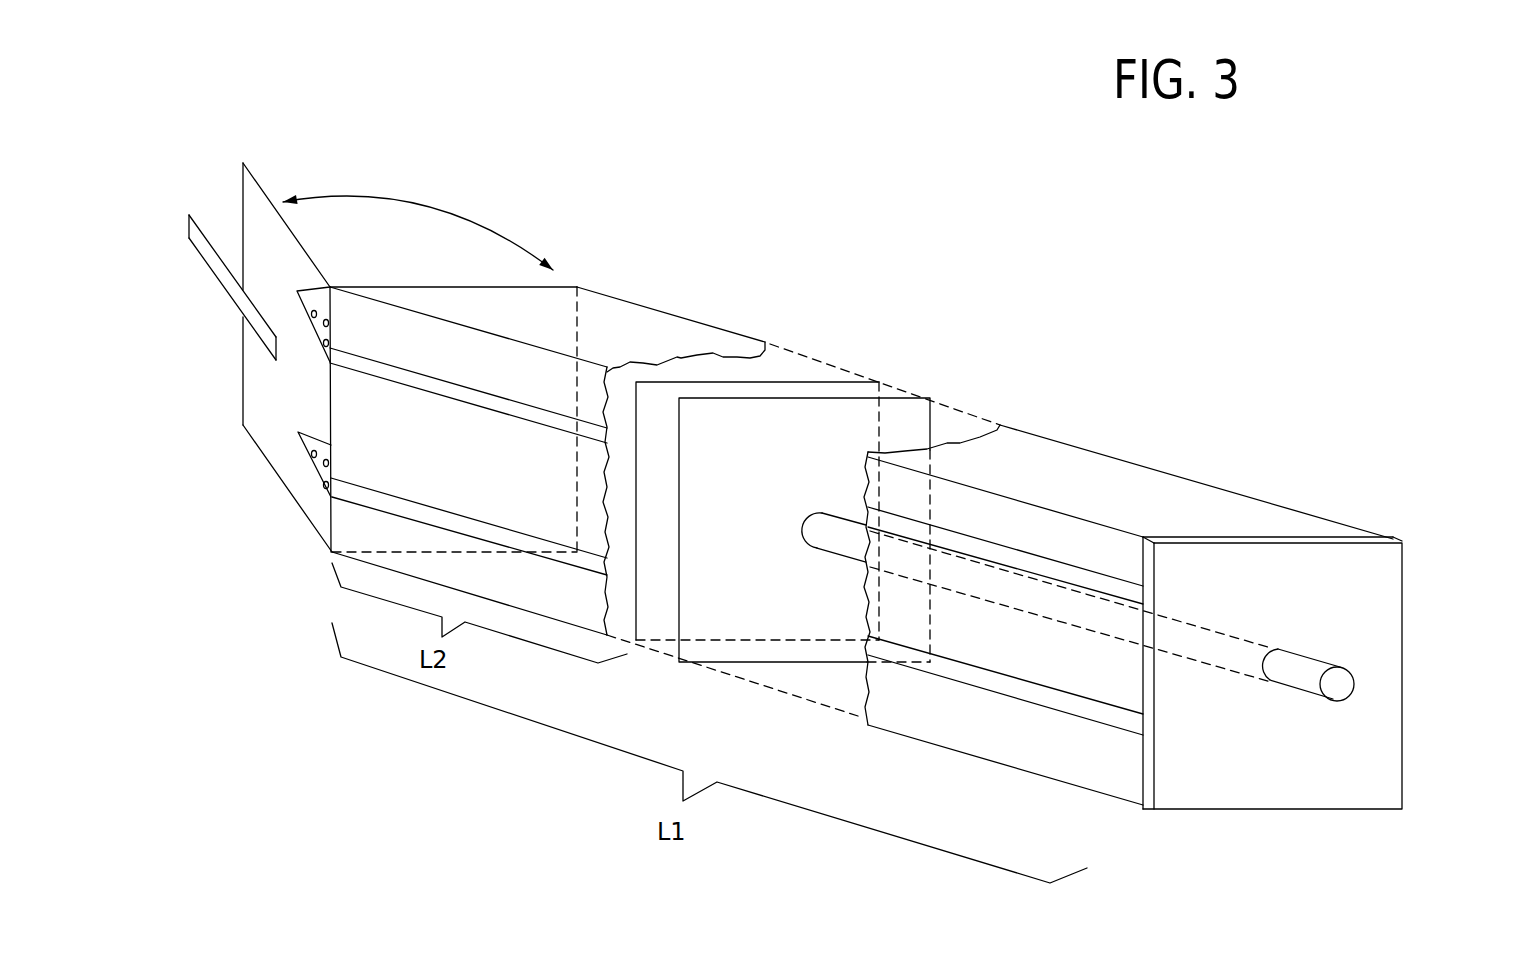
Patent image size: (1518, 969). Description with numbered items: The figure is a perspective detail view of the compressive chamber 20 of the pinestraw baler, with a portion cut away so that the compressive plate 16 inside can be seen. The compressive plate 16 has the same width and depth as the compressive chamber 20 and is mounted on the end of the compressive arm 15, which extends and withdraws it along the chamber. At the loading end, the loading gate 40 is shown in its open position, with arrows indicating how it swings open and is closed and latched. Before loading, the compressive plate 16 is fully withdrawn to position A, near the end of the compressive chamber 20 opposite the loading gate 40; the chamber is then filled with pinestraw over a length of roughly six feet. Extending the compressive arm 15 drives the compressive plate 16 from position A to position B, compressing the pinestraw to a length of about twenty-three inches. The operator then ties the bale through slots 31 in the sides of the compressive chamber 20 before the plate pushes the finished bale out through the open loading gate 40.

The compressive arm 15 is at (1318, 662).
The compressive plate 16 is at (903, 428).
The compressive chamber 20 is at (645, 275).
The slots 31 is at (475, 397).
The loading gate 40 is at (256, 407).
The position A is at (1339, 527).
The position B is at (865, 362).